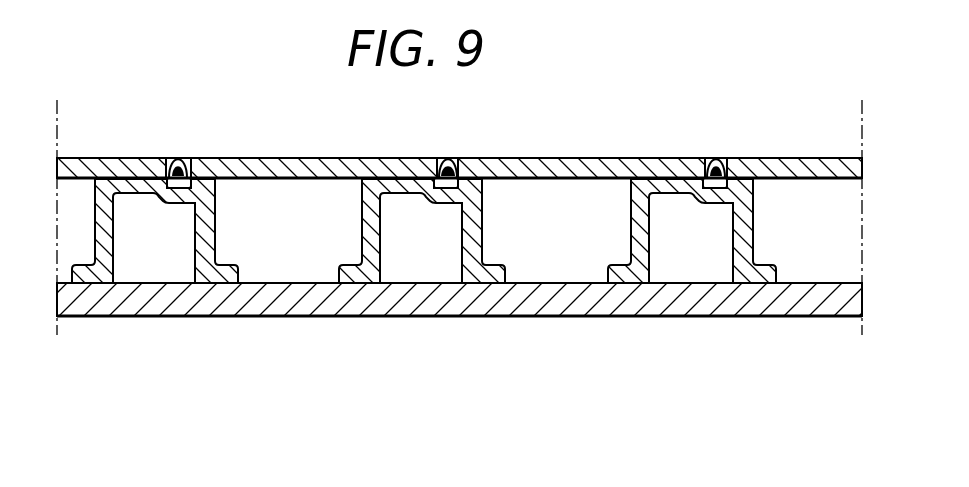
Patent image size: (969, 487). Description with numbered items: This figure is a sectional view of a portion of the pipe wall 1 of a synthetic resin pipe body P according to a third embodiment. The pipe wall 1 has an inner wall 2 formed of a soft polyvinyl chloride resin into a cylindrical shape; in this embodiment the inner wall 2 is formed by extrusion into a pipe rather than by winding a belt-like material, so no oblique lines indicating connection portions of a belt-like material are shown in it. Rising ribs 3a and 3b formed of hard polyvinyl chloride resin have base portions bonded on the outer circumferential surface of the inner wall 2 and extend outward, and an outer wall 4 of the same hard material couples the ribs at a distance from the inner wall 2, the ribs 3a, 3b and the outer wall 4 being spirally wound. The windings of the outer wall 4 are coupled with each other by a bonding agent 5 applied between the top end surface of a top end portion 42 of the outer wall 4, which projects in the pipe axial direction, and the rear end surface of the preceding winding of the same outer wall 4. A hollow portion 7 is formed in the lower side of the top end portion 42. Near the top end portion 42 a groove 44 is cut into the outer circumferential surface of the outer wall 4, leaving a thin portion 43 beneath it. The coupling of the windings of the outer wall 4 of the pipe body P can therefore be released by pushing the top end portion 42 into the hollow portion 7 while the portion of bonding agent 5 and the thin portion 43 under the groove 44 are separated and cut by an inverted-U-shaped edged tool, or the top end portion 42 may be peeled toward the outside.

The pipe wall 1 is at (588, 153).
The inner wall 2 is at (626, 300).
The rising rib 3a is at (382, 247).
The rising rib 3b is at (487, 238).
The outer wall 4 is at (354, 159).
The bonding agent 5 is at (458, 162).
The hollow portion 7 is at (187, 190).
The top end portion 42 is at (444, 162).
The thin portion 43 is at (172, 163).
The groove 44 is at (437, 163).
The pipe body P is at (724, 149).